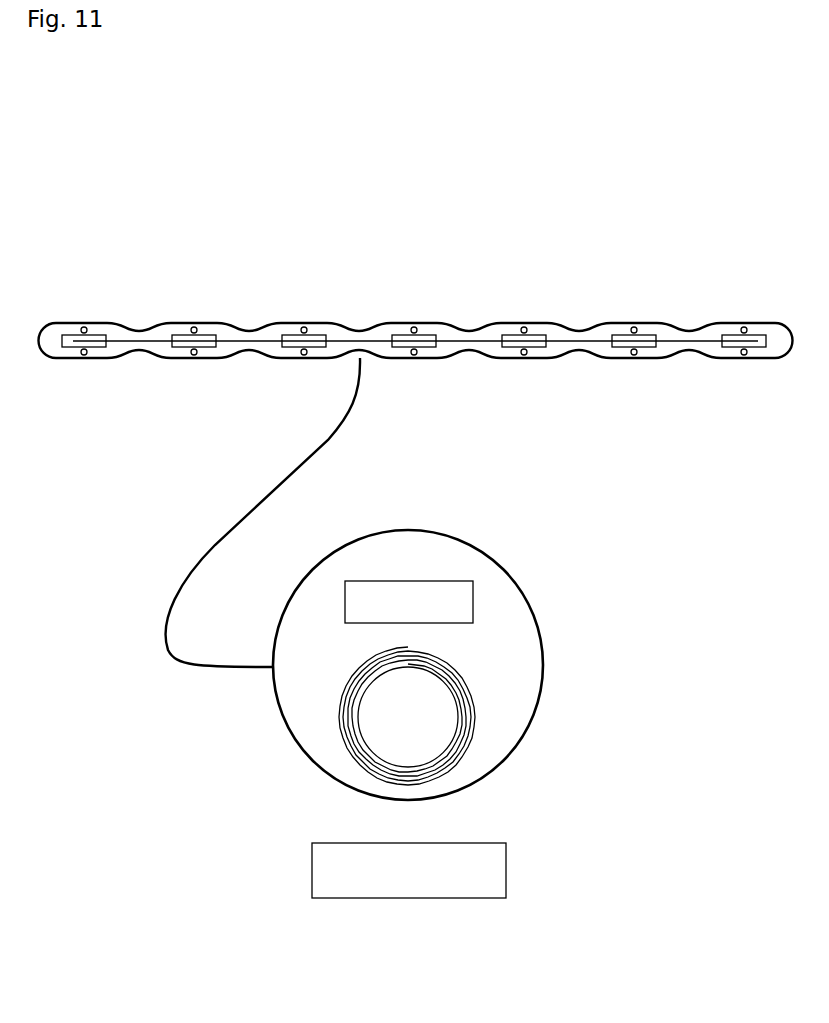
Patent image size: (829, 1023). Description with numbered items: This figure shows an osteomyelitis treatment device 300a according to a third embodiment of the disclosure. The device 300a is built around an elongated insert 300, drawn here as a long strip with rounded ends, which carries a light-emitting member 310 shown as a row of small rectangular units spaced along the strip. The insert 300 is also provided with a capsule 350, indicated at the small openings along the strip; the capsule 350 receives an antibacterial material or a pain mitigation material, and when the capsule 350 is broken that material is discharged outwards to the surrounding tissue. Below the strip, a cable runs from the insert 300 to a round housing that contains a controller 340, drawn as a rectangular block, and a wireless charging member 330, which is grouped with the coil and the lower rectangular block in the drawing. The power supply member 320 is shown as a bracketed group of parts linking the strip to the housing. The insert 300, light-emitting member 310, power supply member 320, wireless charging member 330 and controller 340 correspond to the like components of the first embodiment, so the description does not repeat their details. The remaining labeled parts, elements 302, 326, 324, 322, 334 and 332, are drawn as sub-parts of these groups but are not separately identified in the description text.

The insert 300 is at (647, 182).
The osteomyelitis treatment device 300a is at (328, 102).
The fastening holes 302 is at (744, 327).
The light-emitting member 310 is at (292, 347).
The capsule 350 is at (194, 327).
The power supply member 320 is at (637, 442).
The strip conductor 326 is at (472, 340).
The cable 324 is at (308, 460).
The cable winding core 322 is at (420, 714).
The wireless charging member 330 is at (643, 780).
The cable reel 334 is at (477, 717).
The power supply 332 is at (506, 868).
The controller 340 is at (409, 581).